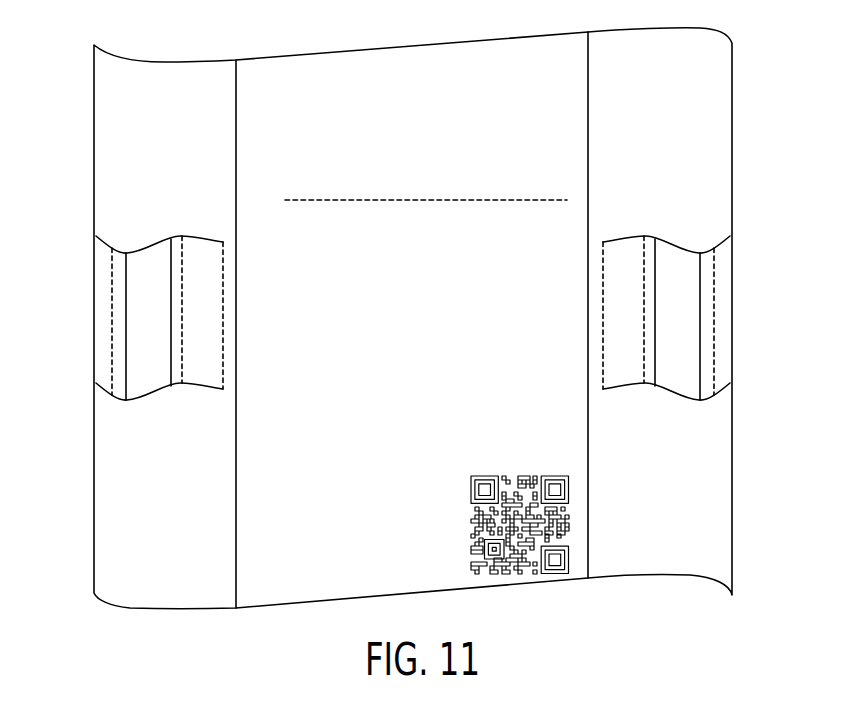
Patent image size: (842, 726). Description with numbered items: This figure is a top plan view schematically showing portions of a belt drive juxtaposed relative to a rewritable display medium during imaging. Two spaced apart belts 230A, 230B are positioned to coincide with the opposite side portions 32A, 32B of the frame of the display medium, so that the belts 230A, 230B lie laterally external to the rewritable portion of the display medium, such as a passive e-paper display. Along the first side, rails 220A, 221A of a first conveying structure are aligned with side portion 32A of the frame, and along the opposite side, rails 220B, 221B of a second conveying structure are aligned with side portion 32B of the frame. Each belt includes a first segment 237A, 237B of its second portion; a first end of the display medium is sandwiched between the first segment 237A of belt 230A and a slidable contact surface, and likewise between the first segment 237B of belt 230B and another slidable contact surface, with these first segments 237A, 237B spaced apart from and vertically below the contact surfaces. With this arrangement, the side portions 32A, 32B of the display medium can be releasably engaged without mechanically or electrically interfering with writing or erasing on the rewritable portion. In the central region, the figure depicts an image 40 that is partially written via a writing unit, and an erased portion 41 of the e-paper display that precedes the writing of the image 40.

The side portion 32A is at (180, 144).
The side portion 32B is at (680, 144).
The image 40 is at (403, 381).
The erased portion 41 is at (403, 144).
The belt 230A is at (158, 311).
The belt 230B is at (695, 312).
The rail 220A is at (218, 328).
The rail 220B is at (632, 249).
The rail 221A is at (102, 307).
The rail 221B is at (722, 314).
The first segment 237A is at (147, 389).
The first segment 237B is at (678, 390).